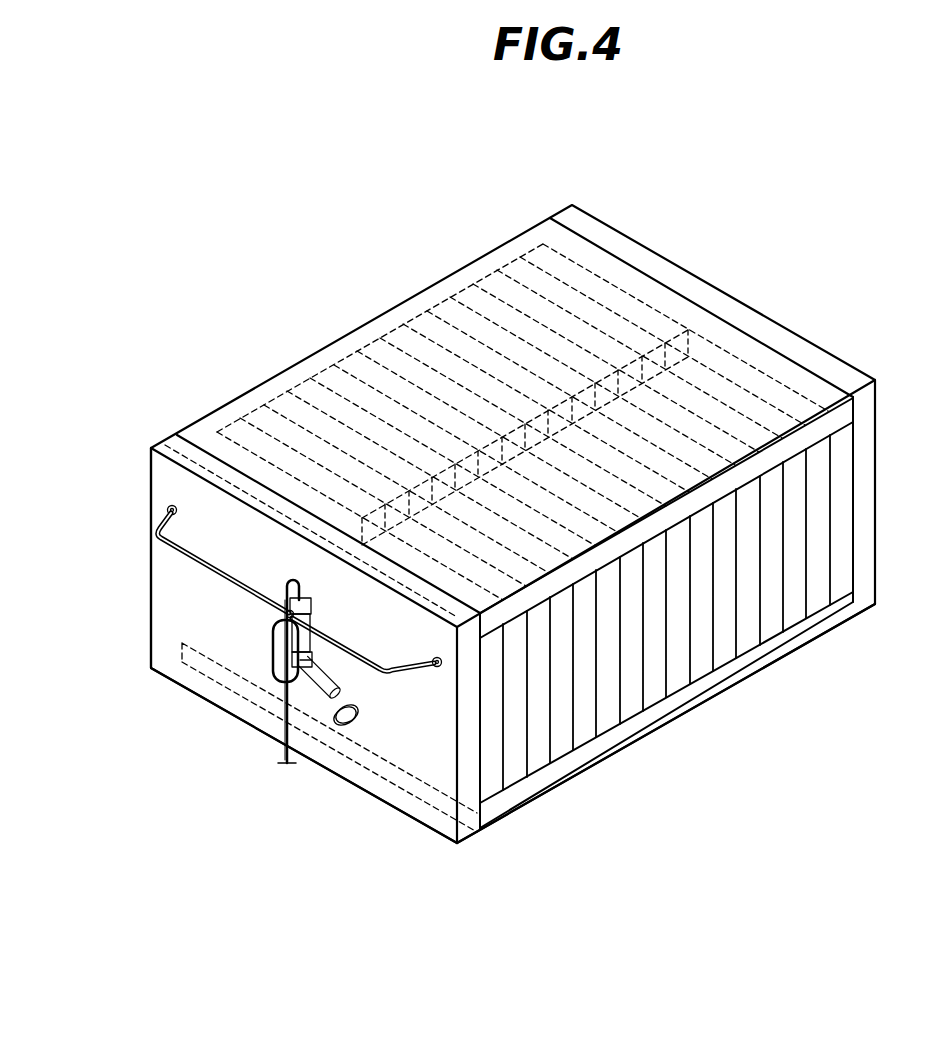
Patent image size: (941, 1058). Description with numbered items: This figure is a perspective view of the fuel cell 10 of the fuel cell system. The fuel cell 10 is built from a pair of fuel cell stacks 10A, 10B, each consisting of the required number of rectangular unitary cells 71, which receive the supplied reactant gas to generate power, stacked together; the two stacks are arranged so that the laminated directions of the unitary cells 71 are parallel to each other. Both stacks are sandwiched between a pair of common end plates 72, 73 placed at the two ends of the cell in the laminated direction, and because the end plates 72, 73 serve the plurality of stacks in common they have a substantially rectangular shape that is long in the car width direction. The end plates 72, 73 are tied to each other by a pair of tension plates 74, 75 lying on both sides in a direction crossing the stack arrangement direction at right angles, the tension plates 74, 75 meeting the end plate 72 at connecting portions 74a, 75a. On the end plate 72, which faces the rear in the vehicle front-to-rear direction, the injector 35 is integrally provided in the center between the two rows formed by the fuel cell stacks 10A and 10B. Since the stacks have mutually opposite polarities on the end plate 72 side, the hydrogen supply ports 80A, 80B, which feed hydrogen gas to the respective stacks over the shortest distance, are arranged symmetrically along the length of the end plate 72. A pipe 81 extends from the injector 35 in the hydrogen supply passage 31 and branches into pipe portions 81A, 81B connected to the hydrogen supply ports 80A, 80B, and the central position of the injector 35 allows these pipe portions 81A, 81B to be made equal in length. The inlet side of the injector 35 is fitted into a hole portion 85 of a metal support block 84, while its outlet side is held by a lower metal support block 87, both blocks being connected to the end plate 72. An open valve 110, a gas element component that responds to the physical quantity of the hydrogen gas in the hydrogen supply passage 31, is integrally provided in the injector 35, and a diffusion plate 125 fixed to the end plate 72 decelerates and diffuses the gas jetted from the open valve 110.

The fuel cell 10 is at (497, 213).
The fuel cell stack 10A is at (697, 703).
The fuel cell stack 10B is at (388, 311).
The hydrogen supply passage 31 is at (283, 728).
The injector 35 is at (300, 640).
The unitary cell 71 is at (453, 295).
The end plate 72 is at (172, 672).
The end plate 73 is at (635, 254).
The tension plate 74 is at (802, 377).
The connecting portion 74a is at (180, 462).
The tension plate 75 is at (833, 620).
The connecting portion 75a is at (423, 802).
The hydrogen supply port 80A is at (447, 667).
The hydrogen supply port 80B is at (168, 508).
The pipe 81 is at (258, 650).
The pipe portion 81A is at (400, 673).
The pipe portion 81B is at (200, 558).
The support block 84 is at (307, 592).
The hole portion 85 is at (313, 602).
The support block 87 is at (340, 678).
The open valve 110 is at (306, 670).
The diffusion plate 125 is at (352, 724).